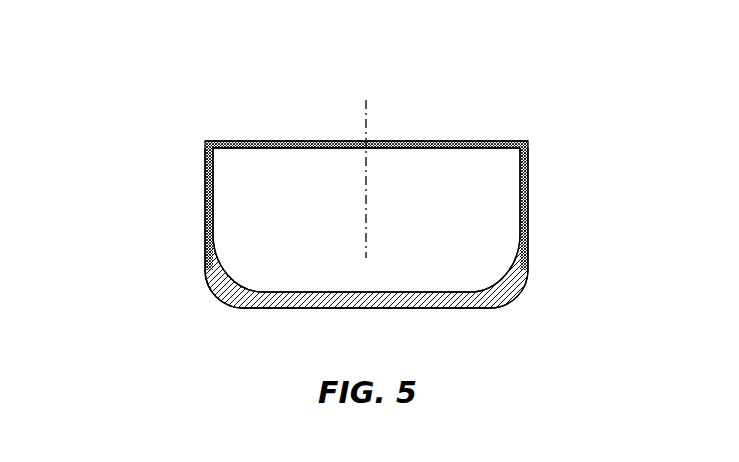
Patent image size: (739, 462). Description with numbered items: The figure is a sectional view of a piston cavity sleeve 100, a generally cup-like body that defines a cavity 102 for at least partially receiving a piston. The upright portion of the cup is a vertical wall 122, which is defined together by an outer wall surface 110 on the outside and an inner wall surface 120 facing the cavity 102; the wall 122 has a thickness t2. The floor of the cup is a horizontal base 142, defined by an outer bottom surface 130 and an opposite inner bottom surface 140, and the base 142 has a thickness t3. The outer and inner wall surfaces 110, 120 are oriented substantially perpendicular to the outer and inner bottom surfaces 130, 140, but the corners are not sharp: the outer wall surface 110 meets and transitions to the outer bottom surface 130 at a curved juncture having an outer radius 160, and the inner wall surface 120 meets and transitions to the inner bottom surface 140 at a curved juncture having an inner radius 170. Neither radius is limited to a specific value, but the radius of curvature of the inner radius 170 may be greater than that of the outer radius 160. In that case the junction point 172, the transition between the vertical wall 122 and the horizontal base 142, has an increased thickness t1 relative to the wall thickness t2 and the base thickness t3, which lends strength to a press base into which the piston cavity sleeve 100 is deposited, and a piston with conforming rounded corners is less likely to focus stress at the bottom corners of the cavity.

The piston cavity sleeve 100 is at (310, 88).
The cavity 102 is at (325, 200).
The outer wall surface 110 is at (205, 207).
The inner wall surface 120 is at (214, 192).
The vertical wall 122 is at (192, 171).
The outer bottom surface 130 is at (320, 309).
The inner bottom surface 140 is at (340, 292).
The horizontal base 142 is at (299, 322).
The outer radius 160 is at (208, 287).
The inner radius 170 is at (257, 290).
The junction point 172 is at (195, 296).
The thickness of junction point t1 is at (193, 320).
The thickness of wall t2 is at (240, 219).
The thickness of base t3 is at (431, 262).